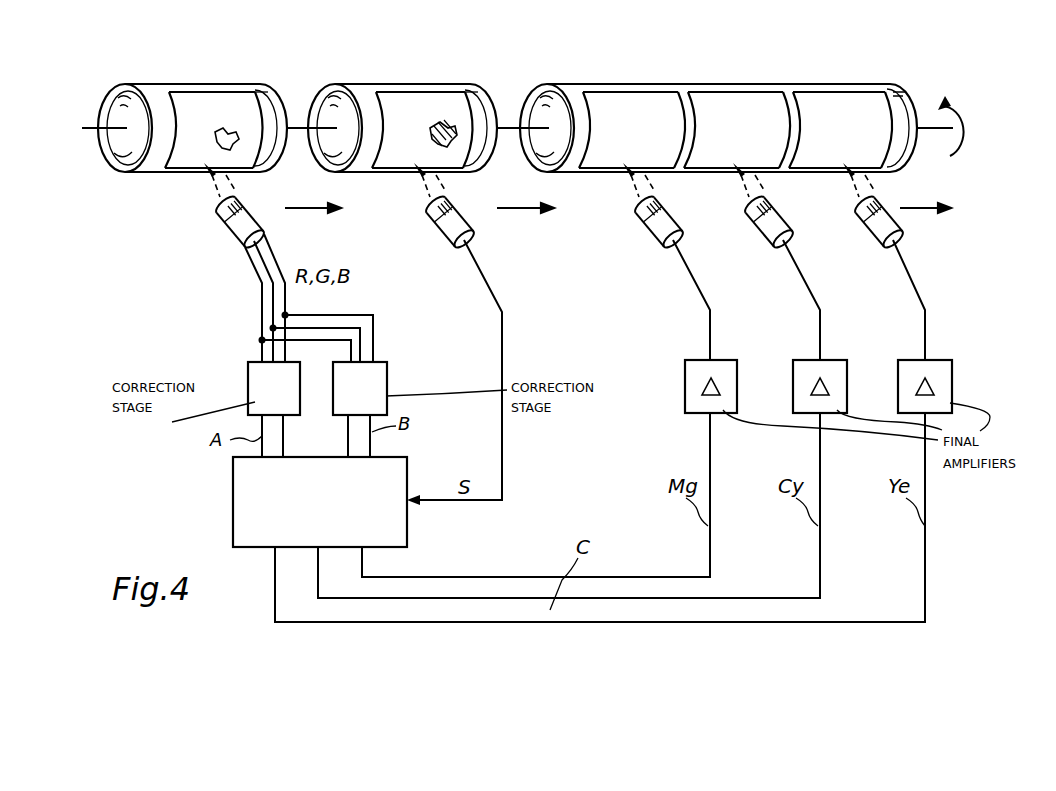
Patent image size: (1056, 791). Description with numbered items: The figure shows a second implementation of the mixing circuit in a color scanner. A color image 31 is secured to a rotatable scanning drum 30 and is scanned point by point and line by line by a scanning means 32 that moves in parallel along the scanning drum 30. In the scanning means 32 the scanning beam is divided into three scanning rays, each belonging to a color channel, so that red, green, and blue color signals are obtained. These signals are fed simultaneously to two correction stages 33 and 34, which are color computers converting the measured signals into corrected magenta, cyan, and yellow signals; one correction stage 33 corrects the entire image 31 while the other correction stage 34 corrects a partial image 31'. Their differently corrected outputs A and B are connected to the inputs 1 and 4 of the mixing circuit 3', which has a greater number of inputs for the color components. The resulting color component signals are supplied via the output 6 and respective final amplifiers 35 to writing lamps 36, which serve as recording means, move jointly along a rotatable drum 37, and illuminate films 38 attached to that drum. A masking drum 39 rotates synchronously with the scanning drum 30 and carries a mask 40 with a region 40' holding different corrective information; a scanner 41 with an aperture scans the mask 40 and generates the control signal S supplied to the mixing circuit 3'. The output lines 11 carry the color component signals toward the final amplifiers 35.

The scanning drum 30 is at (117, 165).
The color image 31 is at (214, 105).
The partial image 31' is at (239, 96).
The scanning means 32 is at (224, 226).
The correction stage 33 is at (253, 378).
The correction stage 34 is at (378, 380).
The final amplifiers 35 is at (726, 382).
The writing lamp 36 is at (644, 228).
The rotatable drum 37 is at (524, 165).
The films 38 is at (633, 108).
The masking drum 39 is at (319, 165).
The mask 40 is at (422, 105).
The region 40' is at (449, 95).
The scanner 41 is at (438, 229).
The input 1 is at (267, 452).
The input 4 is at (374, 450).
The output 6 is at (414, 496).
The mixing circuit 3' is at (297, 502).
The output lines C 11 is at (302, 556).